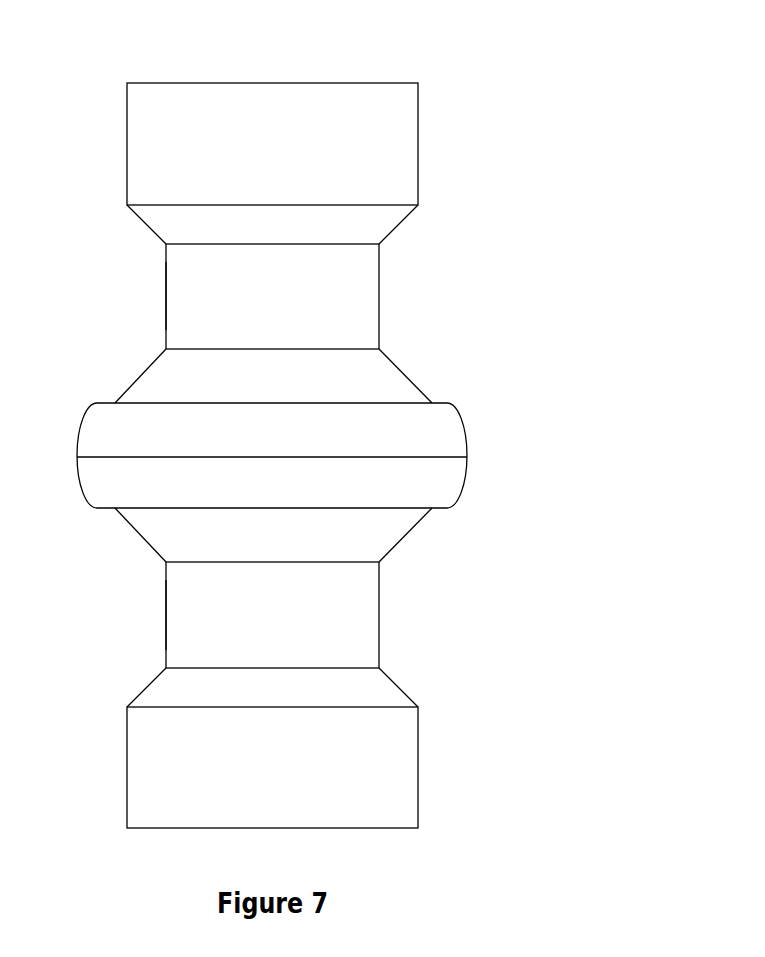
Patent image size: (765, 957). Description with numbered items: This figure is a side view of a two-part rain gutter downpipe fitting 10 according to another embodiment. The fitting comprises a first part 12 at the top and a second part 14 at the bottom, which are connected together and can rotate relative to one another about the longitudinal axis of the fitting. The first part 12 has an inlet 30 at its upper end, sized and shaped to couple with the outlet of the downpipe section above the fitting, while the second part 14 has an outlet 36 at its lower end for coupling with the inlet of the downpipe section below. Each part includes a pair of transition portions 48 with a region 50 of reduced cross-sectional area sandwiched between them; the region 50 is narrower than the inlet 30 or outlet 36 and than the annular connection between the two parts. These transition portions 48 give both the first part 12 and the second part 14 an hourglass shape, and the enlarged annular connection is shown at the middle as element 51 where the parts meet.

The downpipe fitting 10 is at (553, 153).
The first part 12 is at (380, 299).
The second part 14 is at (380, 613).
The inlet 30 is at (342, 83).
The outlet 36 is at (373, 830).
The transition portions 48 is at (157, 227).
The region 50 is at (166, 292).
The central bulge 51 is at (466, 445).